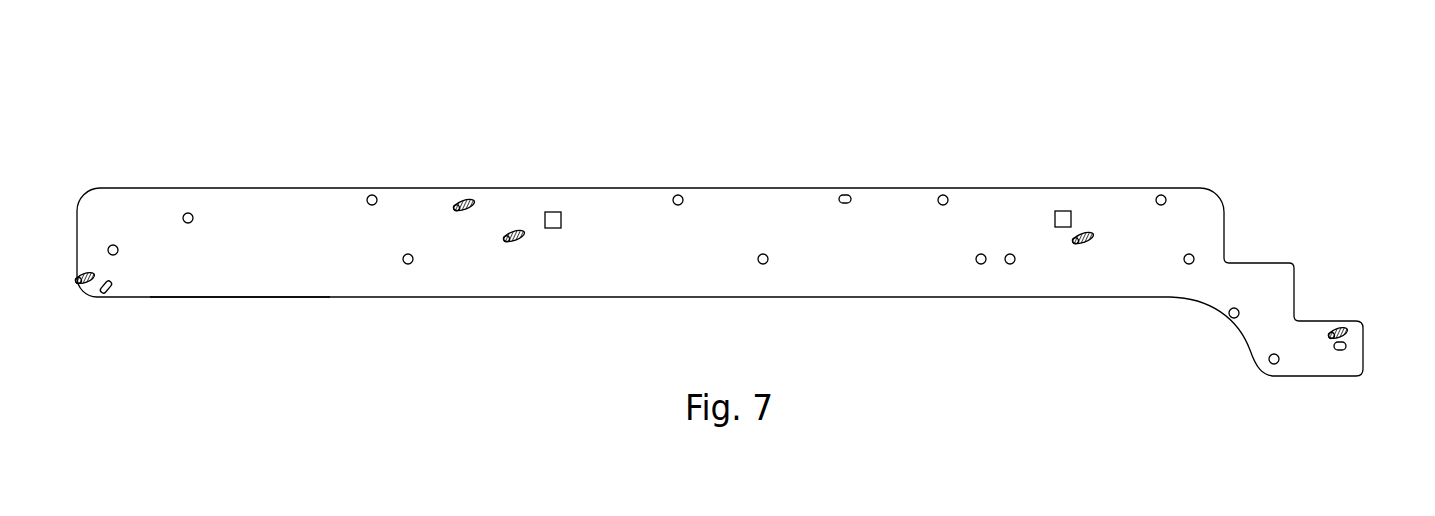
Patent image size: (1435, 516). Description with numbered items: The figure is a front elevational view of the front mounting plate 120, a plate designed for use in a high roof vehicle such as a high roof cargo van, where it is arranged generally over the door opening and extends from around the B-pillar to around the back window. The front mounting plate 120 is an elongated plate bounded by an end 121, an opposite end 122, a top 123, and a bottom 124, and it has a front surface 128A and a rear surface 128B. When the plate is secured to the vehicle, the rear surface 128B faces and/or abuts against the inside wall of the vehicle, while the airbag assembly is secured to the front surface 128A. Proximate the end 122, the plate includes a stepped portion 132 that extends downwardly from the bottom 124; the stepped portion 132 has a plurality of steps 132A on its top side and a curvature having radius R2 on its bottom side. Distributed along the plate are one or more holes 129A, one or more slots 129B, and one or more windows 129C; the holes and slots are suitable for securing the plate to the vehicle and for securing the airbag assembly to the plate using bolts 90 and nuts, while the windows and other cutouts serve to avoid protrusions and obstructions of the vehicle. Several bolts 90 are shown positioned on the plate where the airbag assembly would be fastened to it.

The front mounting plate 120 is at (743, 233).
The end 121 is at (76, 233).
The end 122 is at (1367, 345).
The top 123 is at (384, 187).
The bottom 124 is at (381, 297).
The front surface 128A is at (236, 283).
The rear surface 128B is at (293, 188).
The holes 129A is at (187, 213).
The slots 129B is at (842, 193).
The windows 129C is at (549, 215).
The stepped portion 132 is at (1314, 241).
The steps 132A is at (1225, 220).
The bolts 90 is at (458, 204).
The radius R2 is at (1232, 323).